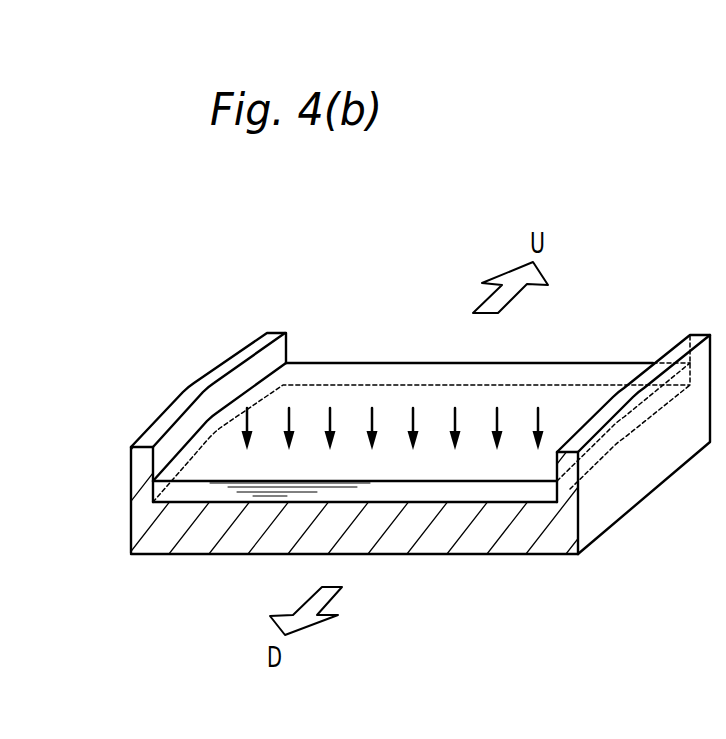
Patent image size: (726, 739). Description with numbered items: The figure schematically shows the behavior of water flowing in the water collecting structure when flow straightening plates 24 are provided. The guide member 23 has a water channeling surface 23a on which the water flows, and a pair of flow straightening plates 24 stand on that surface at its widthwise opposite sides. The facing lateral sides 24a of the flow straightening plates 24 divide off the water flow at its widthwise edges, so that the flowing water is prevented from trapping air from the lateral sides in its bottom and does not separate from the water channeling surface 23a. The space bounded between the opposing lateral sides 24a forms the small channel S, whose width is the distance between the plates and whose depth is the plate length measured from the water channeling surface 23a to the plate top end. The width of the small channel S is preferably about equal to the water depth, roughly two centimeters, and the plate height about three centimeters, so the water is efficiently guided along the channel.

The guide member 23 is at (406, 540).
The water channeling surface 23a is at (505, 508).
The flow straightening plate 24 is at (276, 333).
The lateral side 24a is at (180, 487).
The small channel S is at (357, 353).